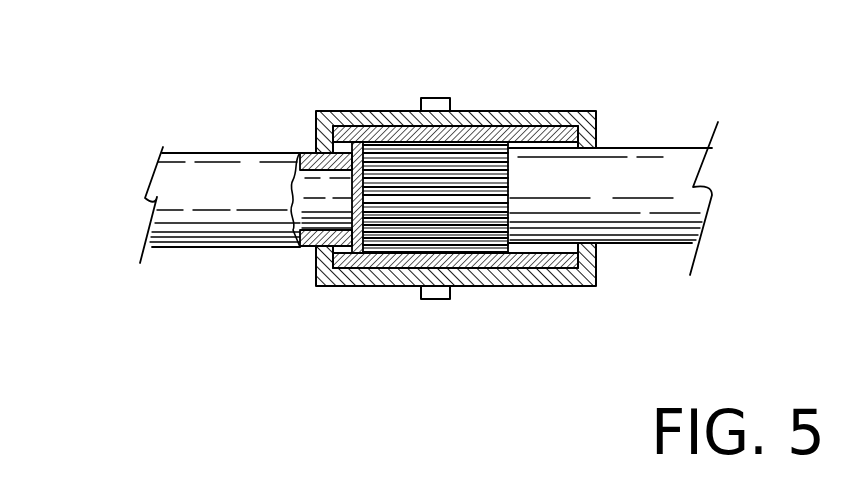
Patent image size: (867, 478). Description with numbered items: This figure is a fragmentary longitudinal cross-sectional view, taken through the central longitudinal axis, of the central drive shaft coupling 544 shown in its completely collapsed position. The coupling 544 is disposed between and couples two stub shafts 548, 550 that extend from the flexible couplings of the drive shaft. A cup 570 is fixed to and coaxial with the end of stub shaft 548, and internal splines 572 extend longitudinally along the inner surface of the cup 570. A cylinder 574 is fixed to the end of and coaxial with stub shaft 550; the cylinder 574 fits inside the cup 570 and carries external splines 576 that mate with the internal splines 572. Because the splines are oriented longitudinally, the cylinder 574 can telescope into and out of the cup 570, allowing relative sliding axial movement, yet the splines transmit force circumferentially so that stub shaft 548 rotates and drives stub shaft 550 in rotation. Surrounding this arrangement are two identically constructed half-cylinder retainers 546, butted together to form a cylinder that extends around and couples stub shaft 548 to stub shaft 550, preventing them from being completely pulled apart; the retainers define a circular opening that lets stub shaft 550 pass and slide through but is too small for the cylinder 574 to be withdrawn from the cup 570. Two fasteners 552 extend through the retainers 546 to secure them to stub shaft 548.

The central drive shaft coupling 544 is at (223, 287).
The half-cylinder retainers 546 is at (390, 111).
The stub shaft 548 is at (230, 153).
The stub shaft 550 is at (638, 175).
The fasteners 552 is at (434, 98).
The cup 570 is at (527, 287).
The internal splines 572 is at (546, 150).
The cylinder 574 is at (417, 187).
The external splines 576 is at (490, 188).